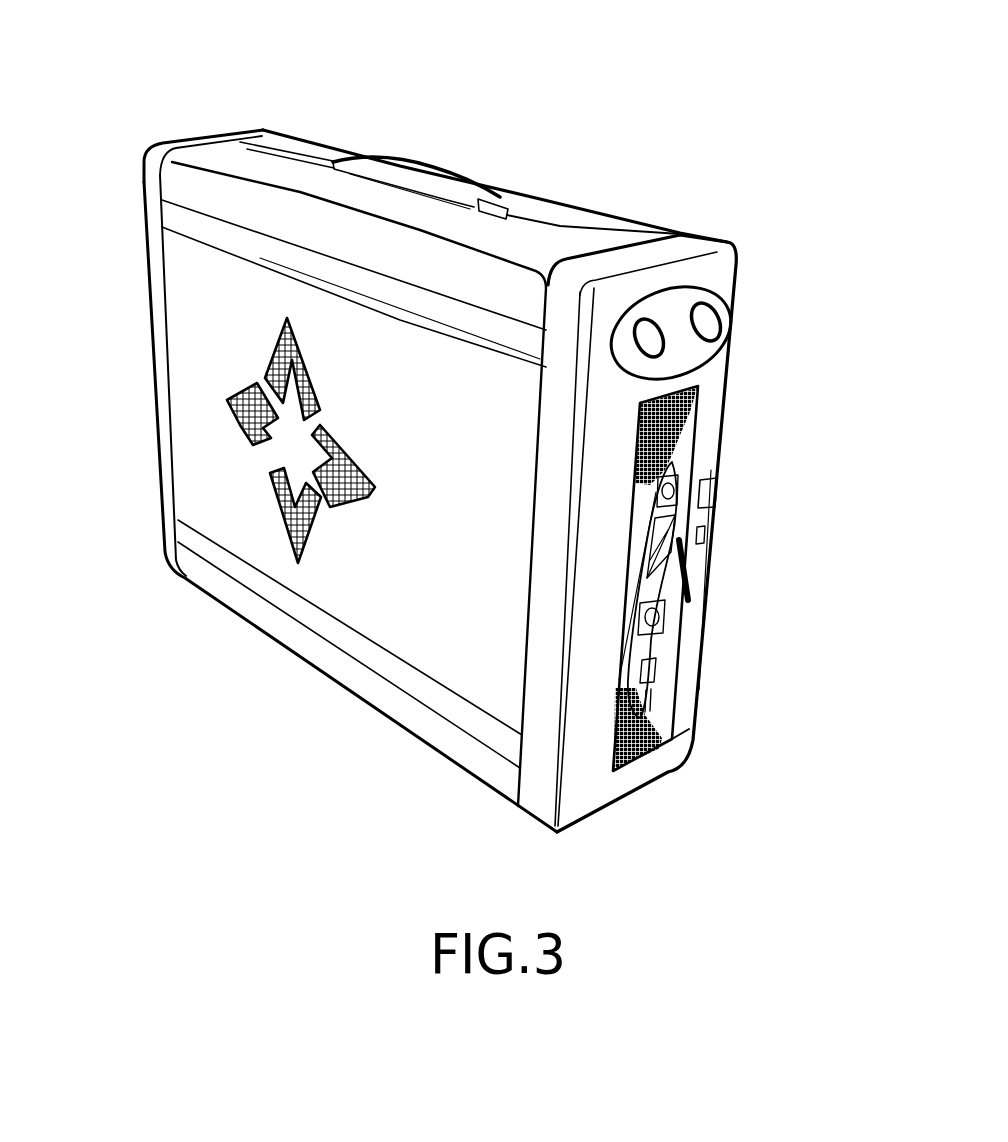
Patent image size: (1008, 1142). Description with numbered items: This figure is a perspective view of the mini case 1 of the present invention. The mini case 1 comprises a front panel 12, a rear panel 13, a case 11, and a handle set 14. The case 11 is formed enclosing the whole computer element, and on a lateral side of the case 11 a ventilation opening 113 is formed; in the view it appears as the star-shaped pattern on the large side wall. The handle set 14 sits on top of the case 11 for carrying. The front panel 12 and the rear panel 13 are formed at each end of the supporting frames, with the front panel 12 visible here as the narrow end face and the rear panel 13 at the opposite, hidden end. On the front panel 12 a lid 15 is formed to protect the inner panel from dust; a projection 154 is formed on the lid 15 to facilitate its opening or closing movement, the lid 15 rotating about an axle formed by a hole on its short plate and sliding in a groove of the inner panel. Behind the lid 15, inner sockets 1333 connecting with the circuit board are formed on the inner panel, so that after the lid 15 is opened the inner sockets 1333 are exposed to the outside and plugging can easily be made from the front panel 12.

The mini case 1 is at (700, 175).
The case 11 is at (180, 286).
The front panel 12 is at (740, 267).
The rear panel 13 is at (198, 136).
The handle set 14 is at (435, 163).
The lid 15 is at (677, 430).
The ventilation opening 113 is at (248, 432).
The projection 154 is at (707, 590).
The inner sockets 1333 is at (647, 643).